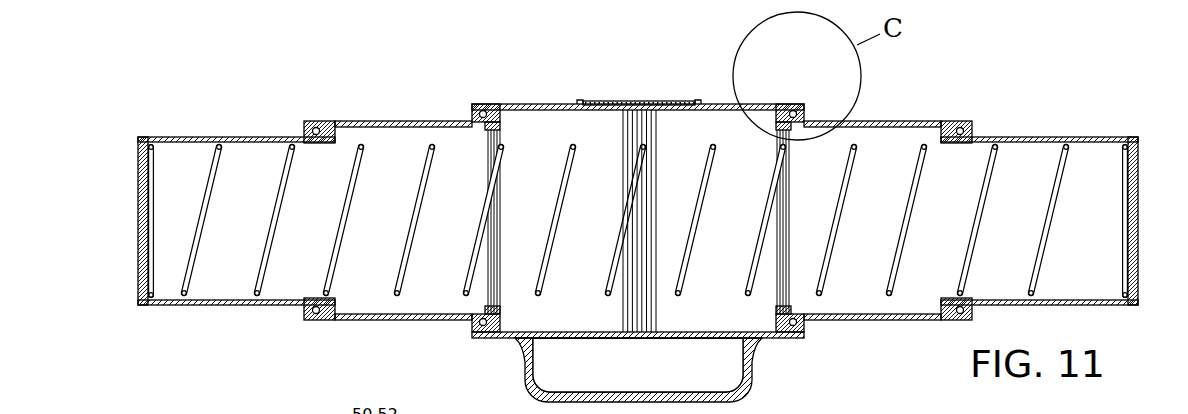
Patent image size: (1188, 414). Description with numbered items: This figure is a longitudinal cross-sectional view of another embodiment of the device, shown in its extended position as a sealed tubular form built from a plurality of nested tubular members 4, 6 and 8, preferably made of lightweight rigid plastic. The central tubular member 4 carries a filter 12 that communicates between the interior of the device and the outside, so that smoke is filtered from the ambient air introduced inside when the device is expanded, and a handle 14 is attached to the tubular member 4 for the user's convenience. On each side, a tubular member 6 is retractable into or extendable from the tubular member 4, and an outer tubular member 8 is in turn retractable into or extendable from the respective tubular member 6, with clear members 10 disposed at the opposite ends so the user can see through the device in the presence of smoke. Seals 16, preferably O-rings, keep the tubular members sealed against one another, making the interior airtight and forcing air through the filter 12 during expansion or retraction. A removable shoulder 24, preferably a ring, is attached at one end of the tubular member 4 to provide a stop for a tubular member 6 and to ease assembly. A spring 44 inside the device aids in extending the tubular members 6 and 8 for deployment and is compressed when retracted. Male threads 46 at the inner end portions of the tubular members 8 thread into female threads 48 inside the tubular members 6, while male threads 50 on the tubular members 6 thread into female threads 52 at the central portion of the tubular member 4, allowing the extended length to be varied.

The tubular member 4 is at (548, 104).
The tubular member 6 is at (390, 121).
The tubular member 8 is at (242, 137).
The clear member 10 is at (146, 220).
The filter 12 is at (613, 100).
The handle 14 is at (753, 376).
The seal 16 is at (322, 145).
The removable shoulder 24 is at (806, 117).
The spring 44 is at (197, 192).
The male threads 46 is at (331, 127).
The female threads 48 is at (503, 130).
The male threads 50 is at (481, 108).
The female threads 52 is at (660, 104).